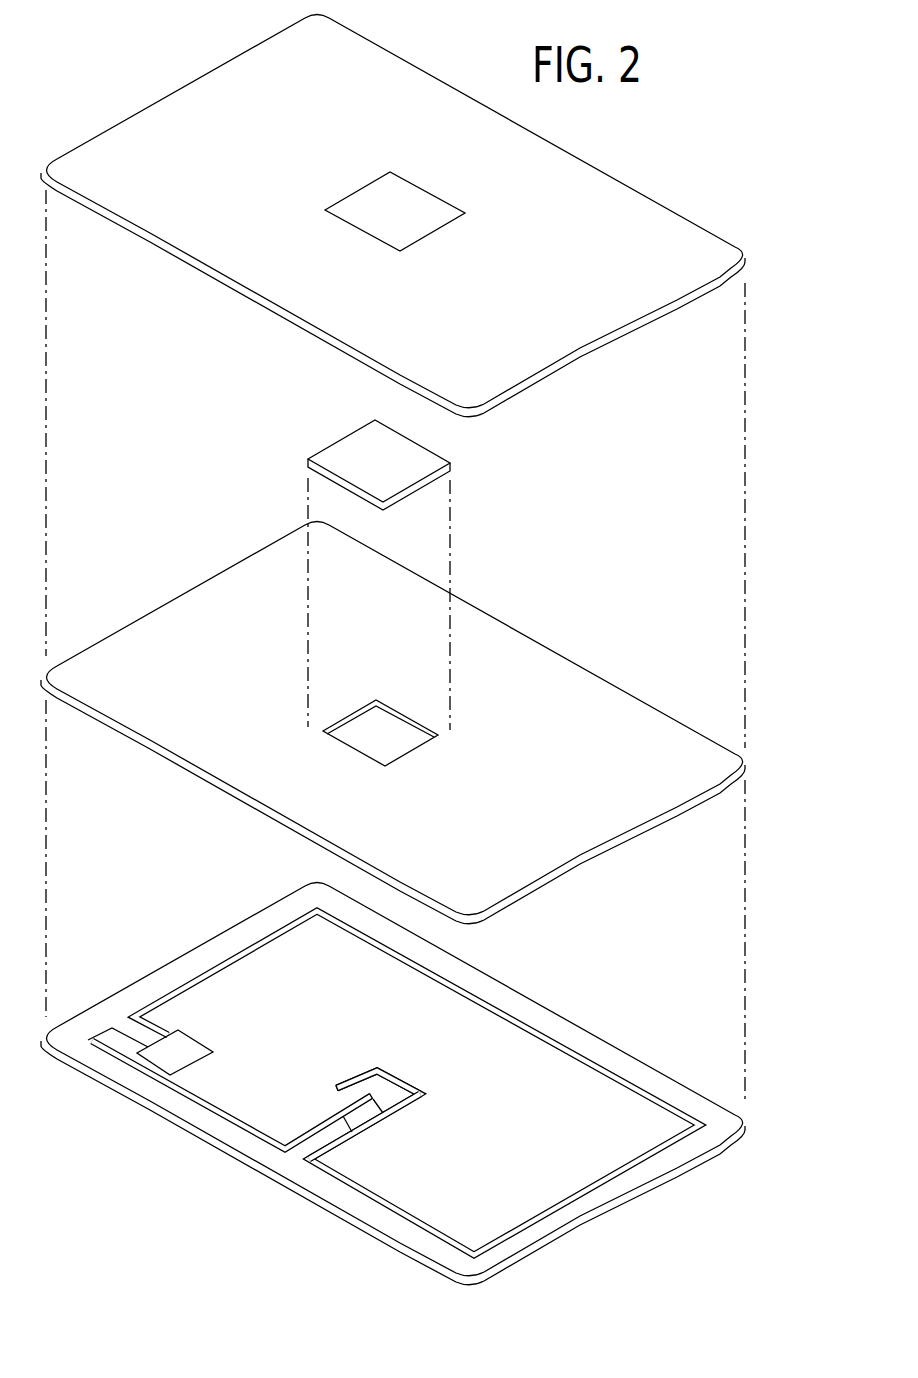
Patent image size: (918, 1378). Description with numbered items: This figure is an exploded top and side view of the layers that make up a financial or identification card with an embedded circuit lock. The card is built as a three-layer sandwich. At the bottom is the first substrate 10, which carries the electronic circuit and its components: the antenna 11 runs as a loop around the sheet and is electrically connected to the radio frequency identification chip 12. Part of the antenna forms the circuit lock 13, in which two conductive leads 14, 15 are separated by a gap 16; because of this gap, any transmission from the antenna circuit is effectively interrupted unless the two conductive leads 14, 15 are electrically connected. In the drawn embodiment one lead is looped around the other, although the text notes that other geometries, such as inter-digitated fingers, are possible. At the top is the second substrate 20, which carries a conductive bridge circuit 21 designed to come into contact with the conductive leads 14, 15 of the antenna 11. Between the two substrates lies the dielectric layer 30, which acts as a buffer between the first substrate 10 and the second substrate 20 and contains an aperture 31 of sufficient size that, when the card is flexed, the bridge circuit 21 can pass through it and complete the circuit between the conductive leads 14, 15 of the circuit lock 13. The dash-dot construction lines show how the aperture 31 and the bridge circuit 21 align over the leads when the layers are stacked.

The first substrate 10 is at (748, 1126).
The antenna 11 is at (657, 1083).
The radio frequency identification chip 12 is at (185, 1047).
The circuit lock 13 is at (413, 1066).
The conductive lead 14 is at (387, 1107).
The conductive lead 15 is at (312, 1128).
The gap 16 is at (343, 1122).
The second substrate 20 is at (746, 256).
The conductive bridge circuit 21 is at (413, 200).
The dielectric layer 30 is at (747, 763).
The aperture 31 is at (405, 742).